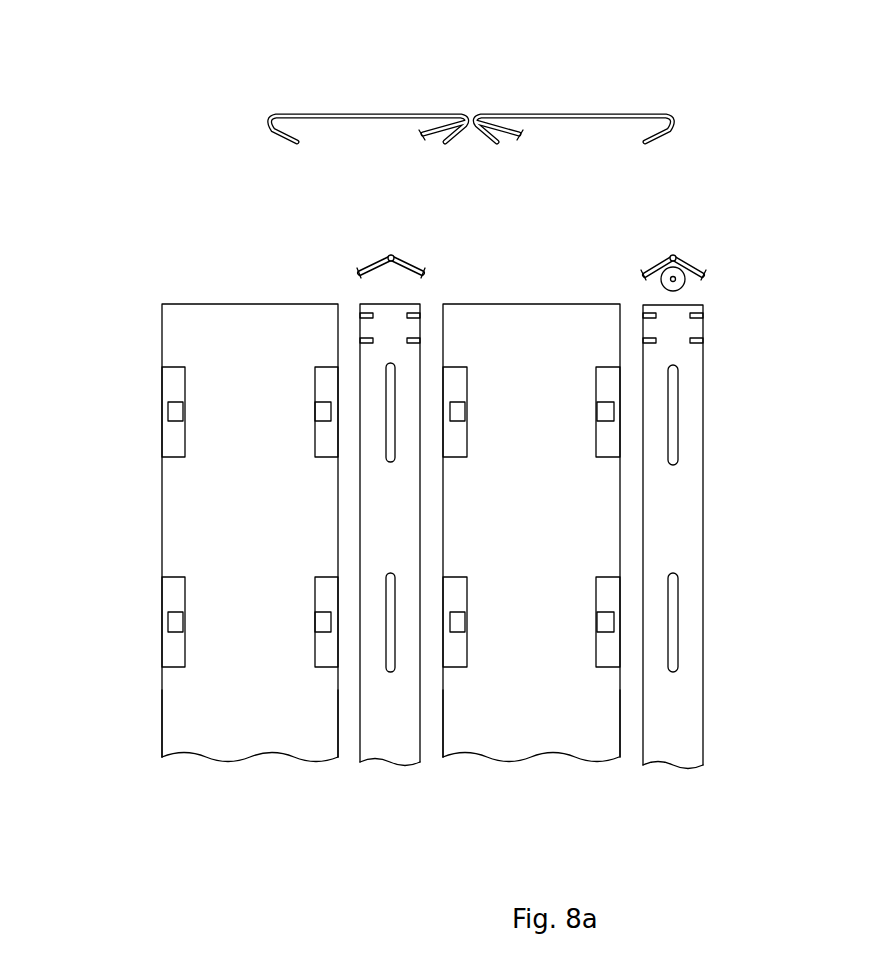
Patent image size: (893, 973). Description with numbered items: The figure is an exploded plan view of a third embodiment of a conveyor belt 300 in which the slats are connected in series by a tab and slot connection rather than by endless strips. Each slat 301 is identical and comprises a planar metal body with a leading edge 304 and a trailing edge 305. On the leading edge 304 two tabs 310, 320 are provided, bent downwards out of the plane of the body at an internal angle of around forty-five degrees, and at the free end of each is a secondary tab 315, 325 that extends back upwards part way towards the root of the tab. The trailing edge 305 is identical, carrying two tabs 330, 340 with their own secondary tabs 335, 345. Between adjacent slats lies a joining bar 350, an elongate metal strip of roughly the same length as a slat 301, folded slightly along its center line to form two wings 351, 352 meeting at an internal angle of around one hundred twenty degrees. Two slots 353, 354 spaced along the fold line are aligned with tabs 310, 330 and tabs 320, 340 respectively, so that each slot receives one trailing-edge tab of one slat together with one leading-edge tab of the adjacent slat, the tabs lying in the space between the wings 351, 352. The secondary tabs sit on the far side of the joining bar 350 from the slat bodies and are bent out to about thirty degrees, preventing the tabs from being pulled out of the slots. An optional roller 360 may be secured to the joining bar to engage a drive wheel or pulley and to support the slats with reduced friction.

The conveyor belt 300 is at (540, 93).
The slat 301 is at (350, 115).
The leading edge 304 is at (163, 712).
The trailing edge 305 is at (340, 716).
The tab 310 is at (165, 412).
The secondary tab 315 is at (175, 405).
The tab 320 is at (283, 138).
The secondary tab 325 is at (175, 613).
The tab 330 is at (322, 367).
The secondary tab 335 is at (316, 411).
The tab 340 is at (322, 663).
The secondary tab 345 is at (316, 618).
The joining bar 350 is at (403, 742).
The wing 351 is at (432, 123).
The wing 352 is at (497, 130).
The slot 353 is at (390, 372).
The slot 354 is at (390, 670).
The roller 360 is at (690, 265).